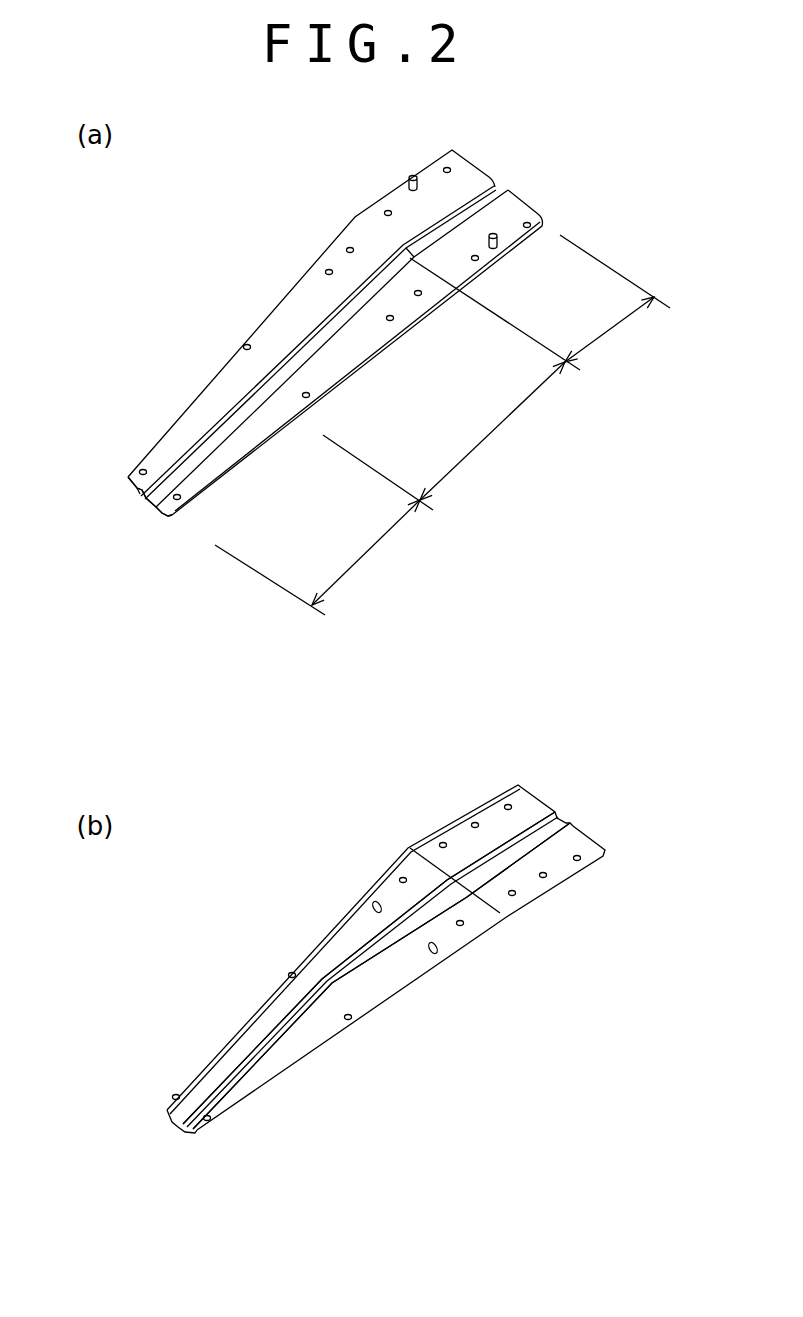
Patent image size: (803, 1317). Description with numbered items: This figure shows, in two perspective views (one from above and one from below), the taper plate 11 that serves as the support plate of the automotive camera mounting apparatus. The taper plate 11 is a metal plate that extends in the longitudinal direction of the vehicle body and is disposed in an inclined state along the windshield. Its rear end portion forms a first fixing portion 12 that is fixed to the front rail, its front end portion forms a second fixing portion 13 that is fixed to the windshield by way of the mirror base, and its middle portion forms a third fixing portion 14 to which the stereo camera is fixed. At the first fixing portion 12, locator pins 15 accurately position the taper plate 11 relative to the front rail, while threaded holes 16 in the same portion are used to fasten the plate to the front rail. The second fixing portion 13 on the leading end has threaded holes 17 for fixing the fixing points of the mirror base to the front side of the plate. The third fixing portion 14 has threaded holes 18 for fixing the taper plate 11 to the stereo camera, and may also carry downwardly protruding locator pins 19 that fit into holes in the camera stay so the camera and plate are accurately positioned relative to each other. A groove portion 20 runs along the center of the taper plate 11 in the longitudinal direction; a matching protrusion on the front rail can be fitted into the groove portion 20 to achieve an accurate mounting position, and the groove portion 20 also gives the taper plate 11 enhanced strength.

The taper plate 11 is at (268, 300).
The first fixing portion 12 is at (540, 302).
The second fixing portion 13 is at (324, 525).
The third fixing portion 14 is at (492, 431).
The locator pins 15 is at (410, 184).
The threaded holes 16 is at (452, 169).
The threaded holes 17 is at (140, 472).
The threaded holes 18 is at (346, 250).
The locator pins 19 is at (373, 907).
The groove portion 20 is at (138, 492).